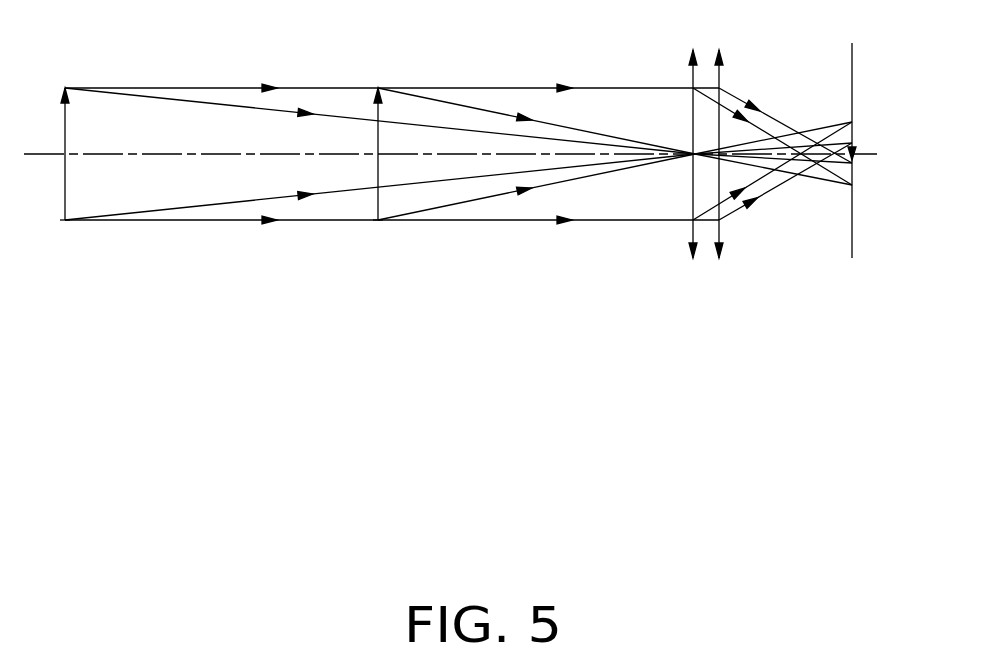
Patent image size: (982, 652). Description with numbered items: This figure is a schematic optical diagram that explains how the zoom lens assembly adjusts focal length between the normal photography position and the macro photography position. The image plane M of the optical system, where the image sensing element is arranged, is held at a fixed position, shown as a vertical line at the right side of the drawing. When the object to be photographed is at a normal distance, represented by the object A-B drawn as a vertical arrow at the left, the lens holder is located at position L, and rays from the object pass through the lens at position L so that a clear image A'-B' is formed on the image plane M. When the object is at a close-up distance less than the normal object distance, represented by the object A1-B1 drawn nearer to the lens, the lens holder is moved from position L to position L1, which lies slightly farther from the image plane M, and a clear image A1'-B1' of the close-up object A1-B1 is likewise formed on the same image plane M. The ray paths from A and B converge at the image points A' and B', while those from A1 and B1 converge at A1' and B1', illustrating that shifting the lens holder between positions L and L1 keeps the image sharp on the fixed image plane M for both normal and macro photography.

The object A is at (65, 139).
The object B is at (65, 236).
The object A1 is at (385, 139).
The object B1 is at (385, 236).
The position L1 is at (689, 137).
The position L is at (718, 137).
The image plane M is at (853, 137).
The image B1' is at (791, 161).
The image B' is at (786, 175).
The image A' is at (786, 130).
The image A1' is at (791, 141).